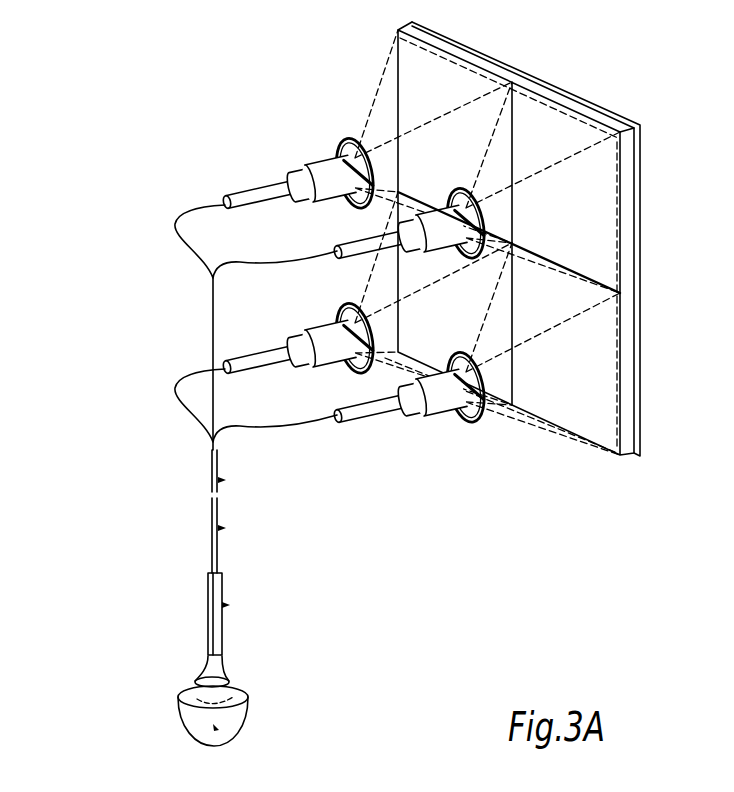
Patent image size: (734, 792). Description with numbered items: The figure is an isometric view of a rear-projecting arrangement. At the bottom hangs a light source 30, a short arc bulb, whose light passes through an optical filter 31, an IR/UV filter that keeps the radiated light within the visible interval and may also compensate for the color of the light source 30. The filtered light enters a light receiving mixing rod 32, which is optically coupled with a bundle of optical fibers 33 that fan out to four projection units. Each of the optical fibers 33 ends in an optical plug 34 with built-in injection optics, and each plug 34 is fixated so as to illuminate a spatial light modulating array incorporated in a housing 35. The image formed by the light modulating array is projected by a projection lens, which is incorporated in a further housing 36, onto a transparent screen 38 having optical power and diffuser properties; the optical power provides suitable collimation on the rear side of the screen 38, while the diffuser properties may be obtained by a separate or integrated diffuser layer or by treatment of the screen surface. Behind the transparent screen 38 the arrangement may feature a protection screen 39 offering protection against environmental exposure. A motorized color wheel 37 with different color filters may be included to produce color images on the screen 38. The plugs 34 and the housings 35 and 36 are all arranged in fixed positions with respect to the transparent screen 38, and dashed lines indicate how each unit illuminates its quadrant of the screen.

The light source 30 is at (182, 717).
The optical filter 31 is at (190, 674).
The light receiving mixing rod 32 is at (210, 597).
The optical fibers 33 is at (212, 537).
The optical plug 34 is at (222, 197).
The housing 35 is at (298, 172).
The housing 36 is at (311, 156).
The motorized color wheel 37 is at (363, 147).
The transparent screen 38 is at (561, 98).
The protection screen 39 is at (641, 186).